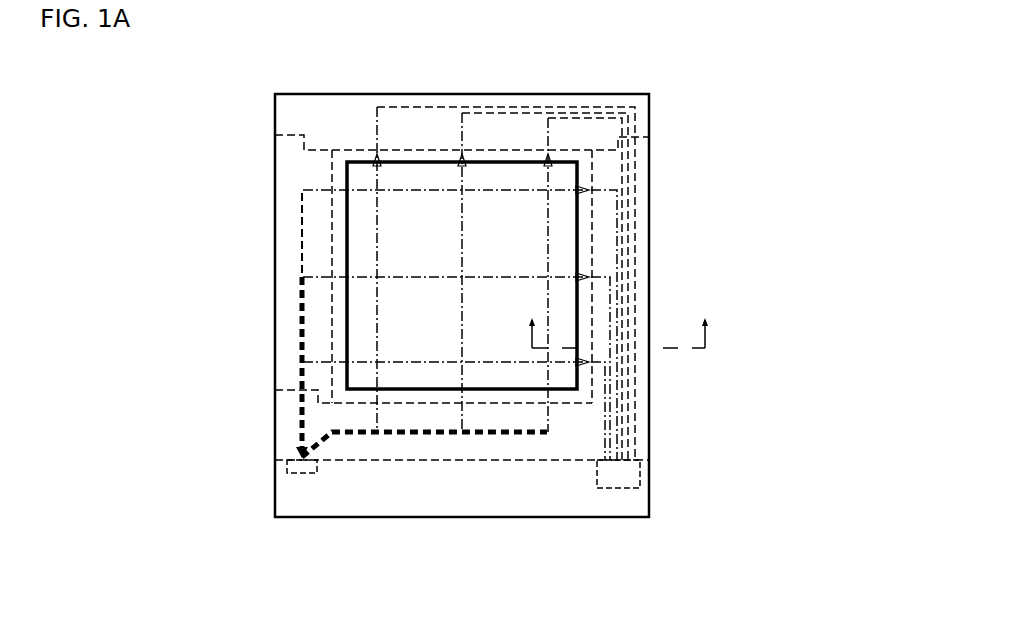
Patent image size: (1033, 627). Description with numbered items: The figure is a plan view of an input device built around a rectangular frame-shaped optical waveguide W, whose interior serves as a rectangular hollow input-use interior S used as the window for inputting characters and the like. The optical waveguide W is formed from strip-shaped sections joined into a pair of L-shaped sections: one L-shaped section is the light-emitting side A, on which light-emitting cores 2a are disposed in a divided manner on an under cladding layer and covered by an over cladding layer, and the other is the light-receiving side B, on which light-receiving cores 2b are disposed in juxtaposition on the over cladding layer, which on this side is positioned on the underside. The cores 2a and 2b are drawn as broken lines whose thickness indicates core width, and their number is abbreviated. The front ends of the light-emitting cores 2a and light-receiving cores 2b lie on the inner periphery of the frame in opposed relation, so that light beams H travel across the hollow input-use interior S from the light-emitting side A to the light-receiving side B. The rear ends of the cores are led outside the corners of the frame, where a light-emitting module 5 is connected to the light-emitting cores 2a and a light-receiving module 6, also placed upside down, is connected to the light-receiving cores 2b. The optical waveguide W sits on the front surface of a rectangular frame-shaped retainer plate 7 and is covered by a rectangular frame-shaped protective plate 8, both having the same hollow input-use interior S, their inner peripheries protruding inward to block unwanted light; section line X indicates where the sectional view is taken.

The optical waveguide W is at (318, 119).
The hollow input-use interior S is at (357, 178).
The light beams H is at (462, 233).
The light-emitting side A is at (280, 233).
The light-receiving side B is at (645, 105).
The section line X- X is at (620, 312).
The light-emitting cores 2a is at (332, 430).
The light-receiving cores 2b is at (605, 193).
The light-emitting module 5 is at (303, 463).
The light-receiving module 6 is at (618, 477).
The retainer plate 7 is at (490, 500).
The protective plate 8 is at (562, 448).